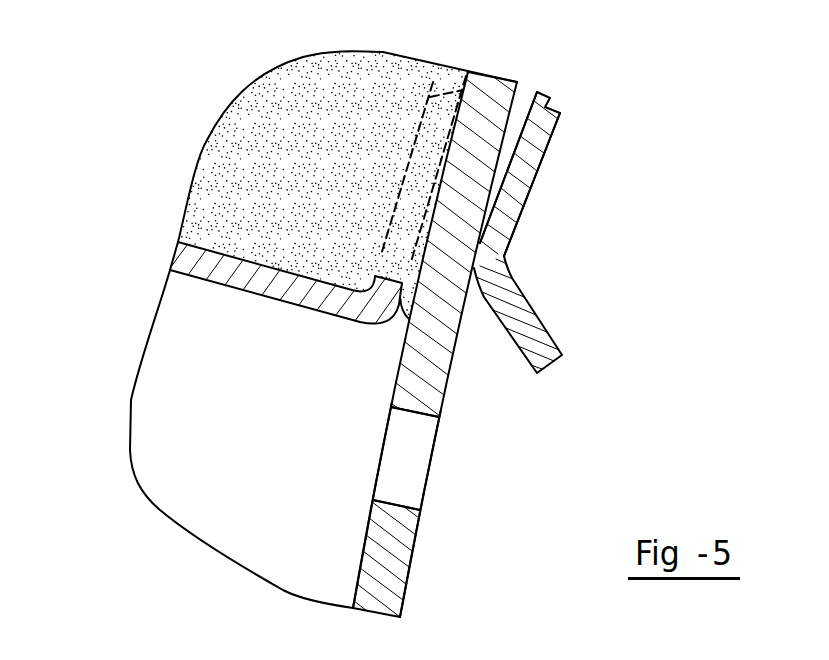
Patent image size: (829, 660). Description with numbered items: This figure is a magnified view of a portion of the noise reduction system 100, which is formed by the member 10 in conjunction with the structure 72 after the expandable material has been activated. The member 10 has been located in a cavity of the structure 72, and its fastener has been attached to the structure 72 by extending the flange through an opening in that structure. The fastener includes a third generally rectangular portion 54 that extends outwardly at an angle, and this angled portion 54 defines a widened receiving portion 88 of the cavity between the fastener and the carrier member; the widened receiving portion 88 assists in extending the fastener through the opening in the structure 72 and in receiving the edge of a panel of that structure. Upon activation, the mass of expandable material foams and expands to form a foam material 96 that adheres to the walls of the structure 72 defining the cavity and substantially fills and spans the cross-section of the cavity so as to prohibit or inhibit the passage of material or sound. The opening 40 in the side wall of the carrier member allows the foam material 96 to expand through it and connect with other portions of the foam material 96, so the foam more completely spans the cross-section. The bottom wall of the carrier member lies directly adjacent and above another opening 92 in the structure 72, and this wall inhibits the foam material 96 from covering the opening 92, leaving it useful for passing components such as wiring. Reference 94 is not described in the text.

The member 10 is at (279, 350).
The opening 40 is at (470, 84).
The third generally rectangular portion 54 is at (557, 351).
The structure 72 is at (397, 562).
The widened receiving portion 88 is at (495, 388).
The opening 92 is at (417, 483).
The recess 94 is at (572, 264).
The foam material 96 is at (296, 169).
The noise reduction system 100 is at (128, 269).